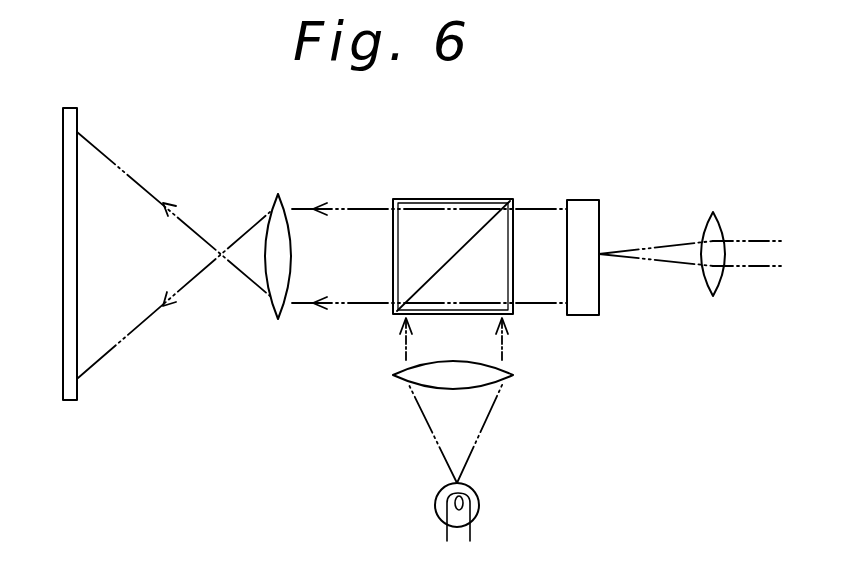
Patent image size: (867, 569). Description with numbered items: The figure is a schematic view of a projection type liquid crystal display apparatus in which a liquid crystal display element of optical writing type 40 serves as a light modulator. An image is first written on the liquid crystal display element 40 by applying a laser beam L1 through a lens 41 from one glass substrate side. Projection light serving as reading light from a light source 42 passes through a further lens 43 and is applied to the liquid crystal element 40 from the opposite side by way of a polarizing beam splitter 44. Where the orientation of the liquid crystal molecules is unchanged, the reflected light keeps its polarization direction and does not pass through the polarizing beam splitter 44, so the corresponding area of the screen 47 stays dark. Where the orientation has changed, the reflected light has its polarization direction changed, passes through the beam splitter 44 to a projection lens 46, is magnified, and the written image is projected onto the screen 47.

The liquid crystal display element of optical writing type 40 is at (583, 208).
The lens 41 is at (712, 228).
The light source 42 is at (470, 498).
The condenser lens 43 is at (510, 375).
The polarizing beam splitter 44 is at (487, 202).
The projection lens 46 is at (280, 207).
The screen 47 is at (76, 118).
The laser beam L1 is at (773, 240).